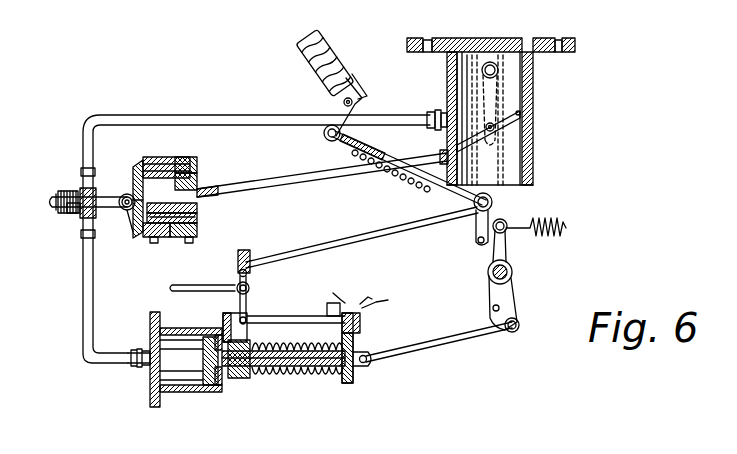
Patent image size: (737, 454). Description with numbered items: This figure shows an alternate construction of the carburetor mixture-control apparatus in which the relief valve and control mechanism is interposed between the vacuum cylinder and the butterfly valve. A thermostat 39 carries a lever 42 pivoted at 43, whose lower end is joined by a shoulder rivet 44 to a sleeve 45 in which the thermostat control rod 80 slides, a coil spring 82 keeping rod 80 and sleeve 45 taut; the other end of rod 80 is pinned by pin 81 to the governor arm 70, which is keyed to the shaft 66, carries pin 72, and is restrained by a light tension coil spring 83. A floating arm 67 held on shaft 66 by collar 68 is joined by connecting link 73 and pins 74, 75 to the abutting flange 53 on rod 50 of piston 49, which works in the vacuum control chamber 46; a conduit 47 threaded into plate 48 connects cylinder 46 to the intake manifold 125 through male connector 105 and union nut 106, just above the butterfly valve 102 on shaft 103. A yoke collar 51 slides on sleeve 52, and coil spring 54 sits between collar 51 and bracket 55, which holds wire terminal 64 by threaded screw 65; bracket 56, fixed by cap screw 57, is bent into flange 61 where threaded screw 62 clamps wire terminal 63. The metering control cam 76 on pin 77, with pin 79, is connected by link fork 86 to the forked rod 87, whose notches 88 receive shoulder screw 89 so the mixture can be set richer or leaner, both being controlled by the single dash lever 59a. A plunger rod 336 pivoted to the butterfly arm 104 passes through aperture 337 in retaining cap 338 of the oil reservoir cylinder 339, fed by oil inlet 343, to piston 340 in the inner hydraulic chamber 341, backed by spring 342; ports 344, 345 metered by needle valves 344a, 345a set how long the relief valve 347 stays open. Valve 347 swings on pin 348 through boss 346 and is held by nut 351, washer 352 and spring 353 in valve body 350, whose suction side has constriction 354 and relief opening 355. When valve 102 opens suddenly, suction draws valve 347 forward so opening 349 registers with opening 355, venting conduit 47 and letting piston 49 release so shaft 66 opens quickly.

The thermostat 39 is at (334, 40).
The lever 42 is at (343, 102).
The pivot 43 is at (360, 98).
The shoulder rivet 44 is at (324, 137).
The sleeve 45 is at (350, 149).
The vacuum control chamber 46 is at (182, 392).
The conduit 47 is at (156, 116).
The plate 48 is at (150, 332).
The piston 49 is at (202, 368).
The rod 50 is at (238, 368).
The yoke collar 51 is at (262, 378).
The sleeve 52 is at (248, 378).
The abutting flange 53 is at (350, 380).
The coil spring 54 is at (310, 380).
The bracket 55 is at (354, 336).
The bracket 56 is at (298, 315).
The cap screw 57 is at (222, 318).
The link 59a is at (210, 283).
The flange 61 is at (365, 302).
The threaded screw 62 is at (361, 318).
The wire terminal 63 is at (384, 302).
The wire terminal 64 is at (342, 298).
The threaded screw 65 is at (328, 308).
The shaft 66 is at (508, 271).
The floating arm 67 is at (515, 300).
The collar 68 is at (512, 280).
The governor arm 70 is at (507, 248).
The pin 72 is at (492, 308).
The connecting link 73 is at (452, 344).
The pin 74 is at (370, 365).
The pin 75 is at (520, 326).
The metering control cam 76 is at (475, 230).
The pin 77 is at (477, 242).
The pin 79 is at (492, 202).
The thermostat control rod 80 is at (433, 196).
The pin 81 is at (505, 222).
The coil spring 82 is at (386, 159).
The light tension coil spring 83 is at (558, 237).
The link fork 86 is at (393, 232).
The forked rod 87 is at (247, 300).
The notches 88 is at (250, 252).
The shoulder screw 89 is at (248, 273).
The butterfly valve 102 is at (520, 113).
The shaft 103 is at (495, 127).
The control arm 104 is at (492, 62).
The male connector 105 is at (436, 111).
The union nut 106 is at (436, 112).
The intake manifold 125 is at (520, 66).
The plunger rod 336 is at (318, 180).
The aperture 337 is at (213, 185).
The retaining cap 338 is at (195, 168).
The oil reservoir cylinder 339 is at (190, 158).
The piston 340 is at (137, 198).
The inner hydraulic chamber 341 is at (197, 207).
The spring 342 is at (197, 218).
The oil inlet 343 is at (172, 158).
The suction inlet port 344 is at (152, 237).
The needle valve 344a is at (154, 244).
The discharge port 345 is at (198, 230).
The needle valve 345a is at (194, 243).
The boss 346 is at (126, 209).
The relief valve 347 is at (121, 208).
The pin 348 is at (135, 170).
The opening 349 is at (75, 214).
The valve body 350 is at (82, 190).
The nut 351 is at (50, 202).
The washer 352 is at (60, 193).
The spring 353 is at (60, 211).
The constriction 354 is at (84, 168).
The relief opening 355 is at (82, 238).